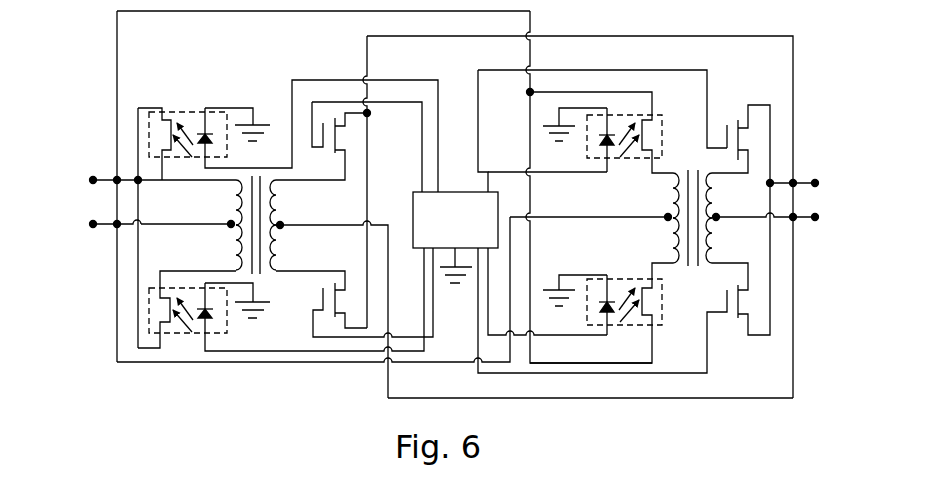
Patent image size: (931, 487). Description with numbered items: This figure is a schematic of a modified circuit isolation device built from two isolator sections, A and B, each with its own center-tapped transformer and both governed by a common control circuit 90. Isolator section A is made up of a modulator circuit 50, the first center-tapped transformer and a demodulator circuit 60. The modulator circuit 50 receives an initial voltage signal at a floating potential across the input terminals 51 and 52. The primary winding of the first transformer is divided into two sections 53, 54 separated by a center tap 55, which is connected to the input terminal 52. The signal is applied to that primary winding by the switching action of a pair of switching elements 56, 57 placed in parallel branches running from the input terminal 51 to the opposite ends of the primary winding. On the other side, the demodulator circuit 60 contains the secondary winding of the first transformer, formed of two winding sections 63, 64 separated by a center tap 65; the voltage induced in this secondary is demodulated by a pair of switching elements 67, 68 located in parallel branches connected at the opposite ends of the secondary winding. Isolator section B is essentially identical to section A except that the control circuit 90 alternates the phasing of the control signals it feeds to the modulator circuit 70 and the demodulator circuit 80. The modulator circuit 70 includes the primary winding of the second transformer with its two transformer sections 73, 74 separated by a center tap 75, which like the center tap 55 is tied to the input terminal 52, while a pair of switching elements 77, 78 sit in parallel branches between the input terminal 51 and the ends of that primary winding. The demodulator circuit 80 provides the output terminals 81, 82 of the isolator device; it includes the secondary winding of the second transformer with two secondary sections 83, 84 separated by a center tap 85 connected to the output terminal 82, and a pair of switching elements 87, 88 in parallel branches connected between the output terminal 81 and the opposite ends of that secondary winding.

The modulator circuit 50 is at (213, 60).
The input terminal 51 is at (94, 178).
The input terminal 52 is at (95, 228).
The primary winding section 53 is at (235, 208).
The primary winding section 54 is at (236, 244).
The center tap 55 is at (209, 223).
The switching element 56 is at (187, 100).
The switching element 57 is at (185, 343).
The demodulator circuit 60 is at (348, 200).
The secondary winding section 63 is at (278, 192).
The secondary winding section 64 is at (280, 250).
The center tap 65 is at (313, 227).
The switching element 67 is at (345, 135).
The switching element 68 is at (350, 300).
The modulator circuit 70 is at (613, 406).
The primary winding section 73 is at (670, 200).
The primary winding section 74 is at (671, 242).
The center tap 75 is at (644, 215).
The switching element 77 is at (618, 113).
The switching element 78 is at (623, 273).
The demodulator circuit 80 is at (785, 55).
The output terminal 81 is at (818, 180).
The output terminal 82 is at (818, 214).
The secondary winding section 83 is at (716, 184).
The secondary winding section 84 is at (718, 237).
The center tap 85 is at (717, 217).
The switching element 87 is at (752, 138).
The switching element 88 is at (753, 302).
The control circuit 90 is at (444, 241).